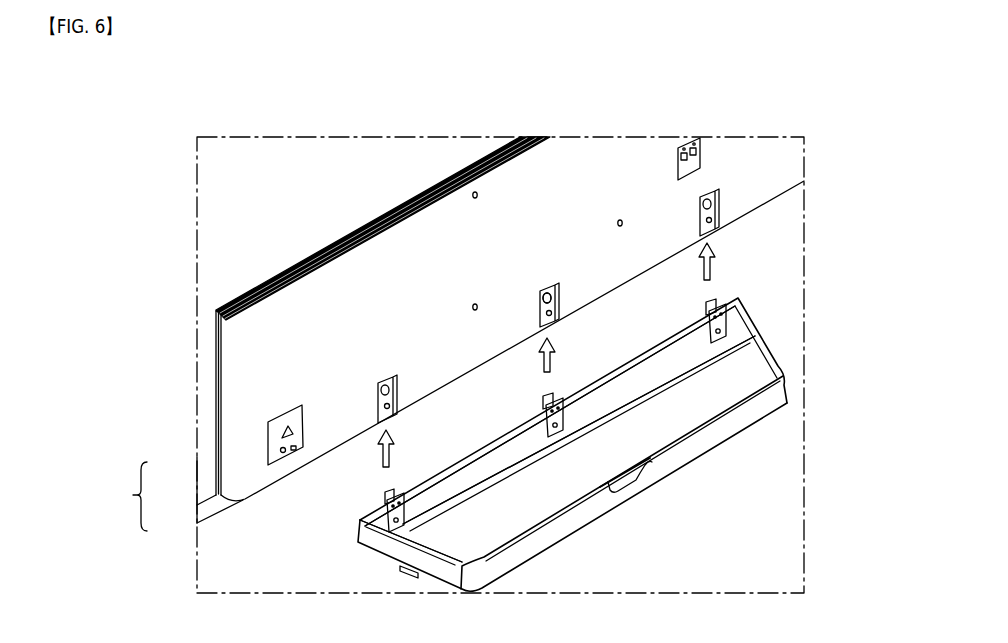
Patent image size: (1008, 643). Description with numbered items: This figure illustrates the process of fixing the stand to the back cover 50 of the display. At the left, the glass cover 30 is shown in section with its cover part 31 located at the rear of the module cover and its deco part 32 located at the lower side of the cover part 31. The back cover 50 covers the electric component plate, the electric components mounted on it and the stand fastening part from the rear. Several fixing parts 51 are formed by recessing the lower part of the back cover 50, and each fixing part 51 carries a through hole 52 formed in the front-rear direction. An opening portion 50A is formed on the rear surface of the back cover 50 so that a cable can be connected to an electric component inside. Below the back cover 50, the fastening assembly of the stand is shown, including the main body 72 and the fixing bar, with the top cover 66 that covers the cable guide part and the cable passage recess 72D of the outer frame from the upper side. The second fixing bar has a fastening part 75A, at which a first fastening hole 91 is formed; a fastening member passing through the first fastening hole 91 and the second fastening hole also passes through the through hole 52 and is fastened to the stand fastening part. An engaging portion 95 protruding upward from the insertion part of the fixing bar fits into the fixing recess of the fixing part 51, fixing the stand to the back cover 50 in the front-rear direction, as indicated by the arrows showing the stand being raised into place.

The glass cover 30 is at (456, 365).
The cover part 31 is at (202, 474).
The deco part 32 is at (202, 514).
The back cover 50 is at (216, 352).
The opening portion 50A is at (728, 157).
The fixing part 51 is at (551, 322).
The through hole 52 is at (552, 287).
The top cover 66 is at (713, 395).
The main body 72 is at (697, 450).
The cable passage recess 72D is at (632, 484).
The fastening part 75A is at (390, 532).
The first fastening hole 91 is at (406, 498).
The engaging portion 95 is at (552, 398).